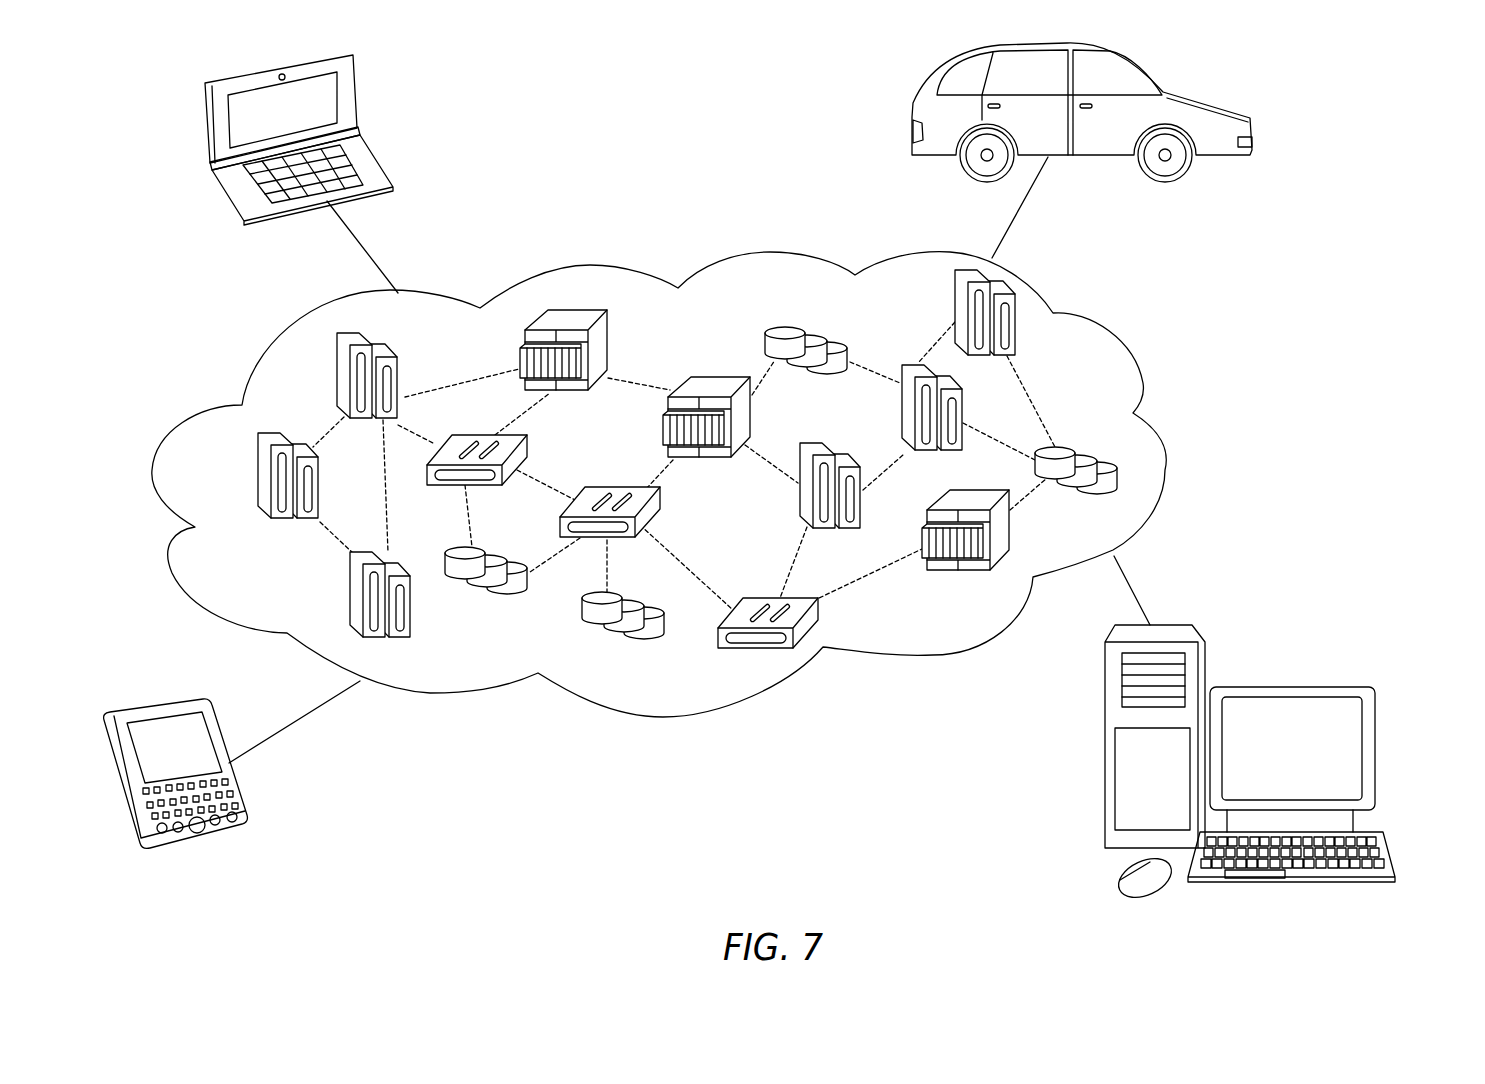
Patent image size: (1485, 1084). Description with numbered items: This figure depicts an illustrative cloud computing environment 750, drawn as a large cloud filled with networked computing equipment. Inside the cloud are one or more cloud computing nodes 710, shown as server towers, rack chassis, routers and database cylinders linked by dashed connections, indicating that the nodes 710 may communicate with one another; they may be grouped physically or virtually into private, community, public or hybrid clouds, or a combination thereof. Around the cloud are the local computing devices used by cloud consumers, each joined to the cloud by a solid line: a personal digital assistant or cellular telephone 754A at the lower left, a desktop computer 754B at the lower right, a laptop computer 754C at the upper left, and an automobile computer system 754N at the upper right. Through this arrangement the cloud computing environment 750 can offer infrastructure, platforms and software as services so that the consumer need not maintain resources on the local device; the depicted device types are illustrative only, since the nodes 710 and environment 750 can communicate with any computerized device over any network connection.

The cloud computing nodes 710 is at (1100, 367).
The cloud computing environment 750 is at (1165, 477).
The personal digital assistant (PDA) or cellular telephone 754A is at (250, 806).
The desktop computer 754B is at (1375, 748).
The laptop computer 754C is at (355, 83).
The automobile computer system 754N is at (1253, 125).